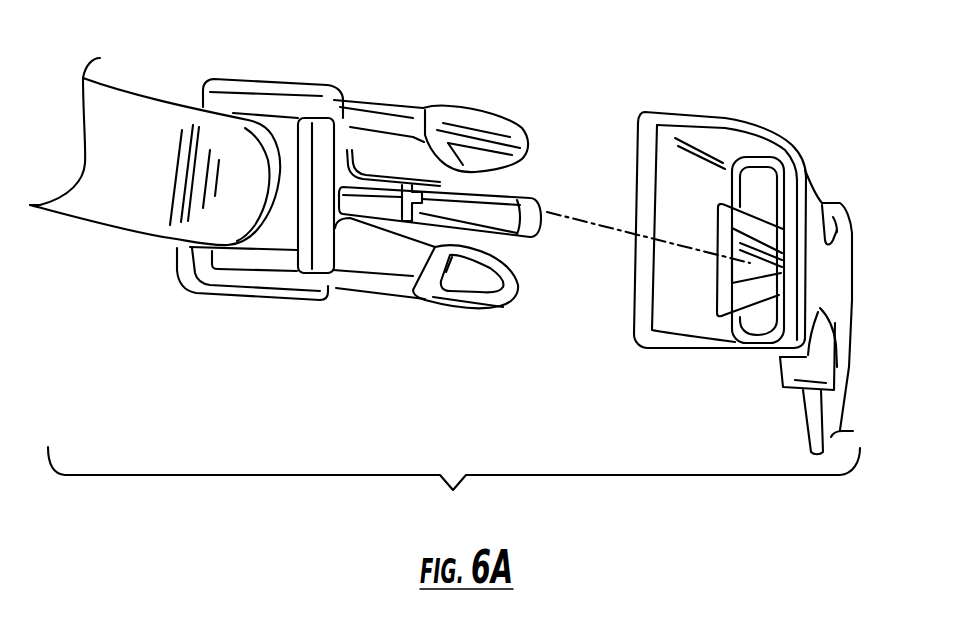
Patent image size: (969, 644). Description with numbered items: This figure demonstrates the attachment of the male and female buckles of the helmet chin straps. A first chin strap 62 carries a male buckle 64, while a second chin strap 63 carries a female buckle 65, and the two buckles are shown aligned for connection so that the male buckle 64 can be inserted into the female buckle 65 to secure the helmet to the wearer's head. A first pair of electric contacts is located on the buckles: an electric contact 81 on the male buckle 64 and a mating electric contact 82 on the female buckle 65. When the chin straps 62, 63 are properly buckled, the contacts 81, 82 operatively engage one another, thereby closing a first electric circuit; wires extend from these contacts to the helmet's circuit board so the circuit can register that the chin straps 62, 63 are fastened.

The chin strap 62 is at (147, 99).
The male buckle 64 is at (272, 88).
The electric contact 81 is at (333, 140).
The female buckle 65 is at (668, 114).
The electric contact 82 is at (777, 185).
The chin strap 63 is at (828, 413).